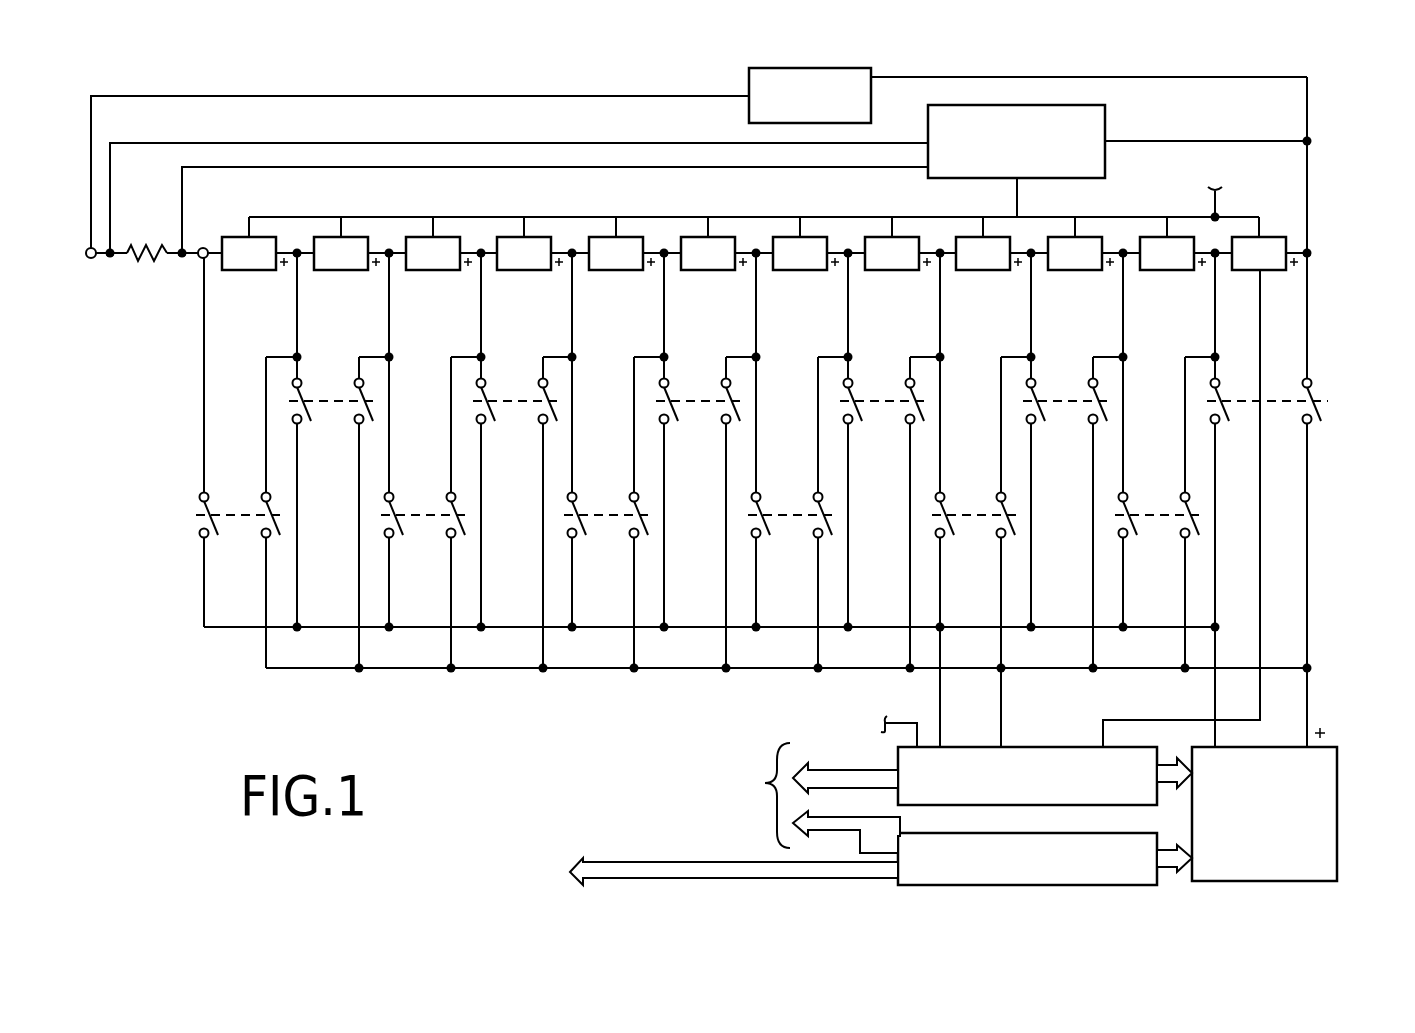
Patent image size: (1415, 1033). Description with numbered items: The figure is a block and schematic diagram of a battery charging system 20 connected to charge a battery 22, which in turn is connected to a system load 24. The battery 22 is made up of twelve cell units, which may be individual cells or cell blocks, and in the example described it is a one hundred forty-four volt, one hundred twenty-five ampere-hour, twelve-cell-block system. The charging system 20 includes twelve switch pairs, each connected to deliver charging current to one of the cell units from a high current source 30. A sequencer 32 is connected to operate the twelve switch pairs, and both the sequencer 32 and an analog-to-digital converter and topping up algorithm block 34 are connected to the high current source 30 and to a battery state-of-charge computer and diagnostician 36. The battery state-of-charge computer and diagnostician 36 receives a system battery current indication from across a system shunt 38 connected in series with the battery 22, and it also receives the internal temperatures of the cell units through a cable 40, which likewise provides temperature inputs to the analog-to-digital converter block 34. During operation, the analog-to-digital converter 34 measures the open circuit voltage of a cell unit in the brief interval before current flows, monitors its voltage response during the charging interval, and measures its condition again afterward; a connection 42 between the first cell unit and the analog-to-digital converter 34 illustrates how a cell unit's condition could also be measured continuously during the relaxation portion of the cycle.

The battery charging system 20 is at (1333, 123).
The battery 22 is at (213, 277).
The system load 24 is at (748, 109).
The high current source 30 is at (1248, 882).
The sequencer 32 is at (990, 886).
The analog-to-digital converter and topping up algorithm block 34 is at (897, 760).
The battery state-of-charge computer and diagnostician 36 is at (1107, 121).
The system shunt 38 is at (143, 240).
The cable 40 is at (900, 718).
The connection 42 is at (1262, 472).